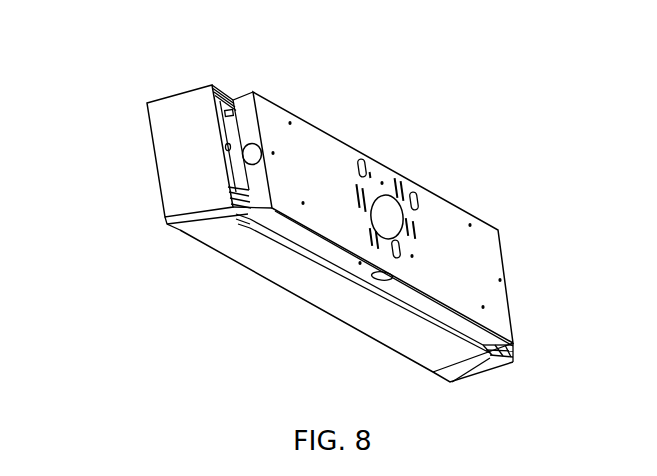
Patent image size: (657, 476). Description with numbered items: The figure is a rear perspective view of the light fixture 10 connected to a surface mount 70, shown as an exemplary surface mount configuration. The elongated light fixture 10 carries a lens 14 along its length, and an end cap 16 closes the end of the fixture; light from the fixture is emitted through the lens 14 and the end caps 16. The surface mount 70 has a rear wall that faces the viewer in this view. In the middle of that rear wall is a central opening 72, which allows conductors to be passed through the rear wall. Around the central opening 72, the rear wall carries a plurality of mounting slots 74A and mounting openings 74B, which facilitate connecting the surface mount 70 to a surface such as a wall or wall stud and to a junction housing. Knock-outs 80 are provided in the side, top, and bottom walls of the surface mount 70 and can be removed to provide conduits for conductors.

The light fixture 10 is at (175, 293).
The lens 14 is at (307, 290).
The end caps 16 is at (152, 138).
The surface mount 70 is at (498, 231).
The central opening 72 is at (392, 199).
The mounting slots 74A is at (368, 178).
The mounting openings 74B is at (392, 252).
The knock-outs 80 is at (247, 144).